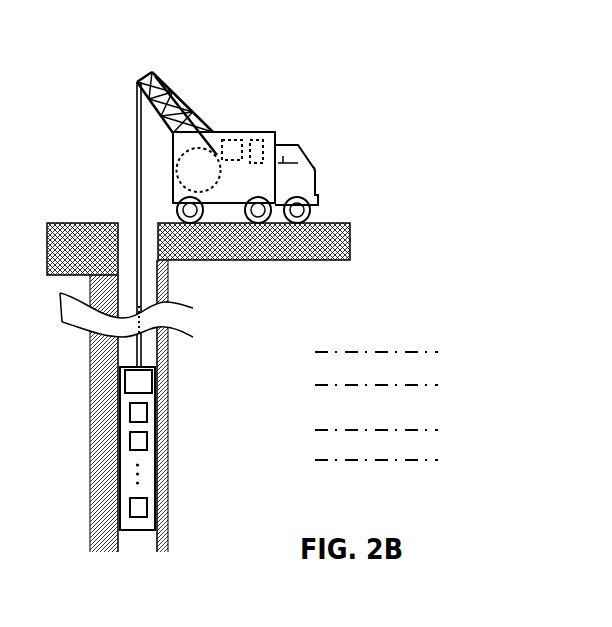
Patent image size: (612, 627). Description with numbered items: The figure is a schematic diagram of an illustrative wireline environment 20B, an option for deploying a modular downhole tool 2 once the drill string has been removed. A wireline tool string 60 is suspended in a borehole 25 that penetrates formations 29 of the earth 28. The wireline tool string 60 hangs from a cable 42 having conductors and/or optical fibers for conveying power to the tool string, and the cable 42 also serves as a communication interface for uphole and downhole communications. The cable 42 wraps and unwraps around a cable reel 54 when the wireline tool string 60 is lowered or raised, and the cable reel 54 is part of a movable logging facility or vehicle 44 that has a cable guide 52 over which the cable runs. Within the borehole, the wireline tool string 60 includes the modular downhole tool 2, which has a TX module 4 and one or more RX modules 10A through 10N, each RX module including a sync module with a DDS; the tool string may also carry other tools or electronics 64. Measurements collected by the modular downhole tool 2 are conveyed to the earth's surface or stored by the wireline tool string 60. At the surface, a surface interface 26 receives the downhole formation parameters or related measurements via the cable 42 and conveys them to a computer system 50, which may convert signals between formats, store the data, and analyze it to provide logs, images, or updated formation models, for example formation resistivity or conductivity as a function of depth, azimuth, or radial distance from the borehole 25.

The wireline environment 20B is at (397, 83).
The cable guide 52 is at (167, 72).
The cable 42 is at (137, 178).
The borehole 25 is at (130, 238).
The earth 28 is at (102, 256).
The cable reel 54 is at (183, 178).
The surface interface 26 is at (230, 140).
The computer system 50 is at (257, 143).
The movable logging facility or vehicle 44 is at (311, 175).
The other tools or electronics 64 is at (152, 383).
The TX module 4 is at (132, 412).
The RX module 10A is at (147, 445).
The modular downhole tool 2 is at (155, 465).
The RX module 10N is at (147, 507).
The wireline tool string 60 is at (222, 370).
The formations 29 is at (447, 338).